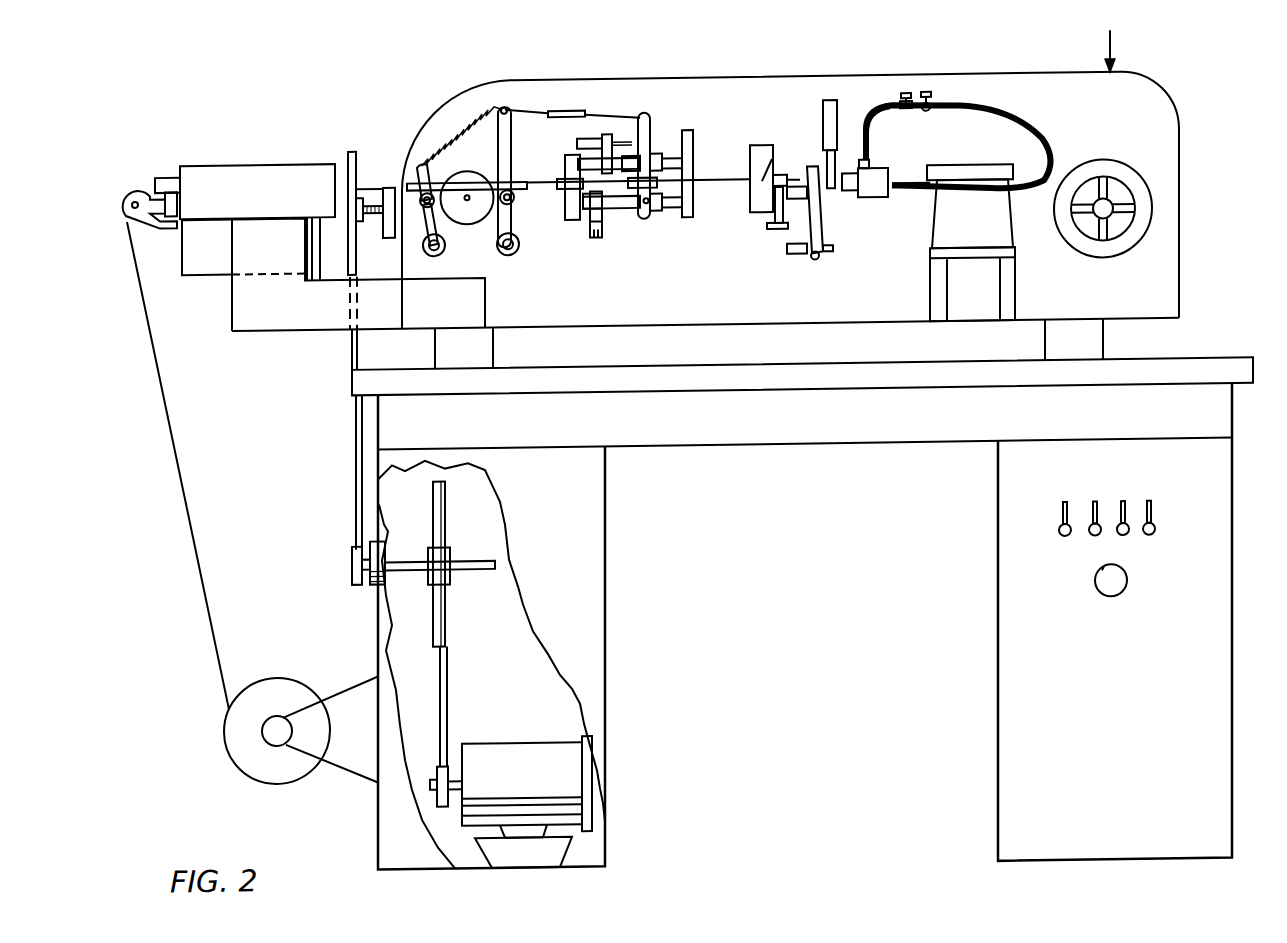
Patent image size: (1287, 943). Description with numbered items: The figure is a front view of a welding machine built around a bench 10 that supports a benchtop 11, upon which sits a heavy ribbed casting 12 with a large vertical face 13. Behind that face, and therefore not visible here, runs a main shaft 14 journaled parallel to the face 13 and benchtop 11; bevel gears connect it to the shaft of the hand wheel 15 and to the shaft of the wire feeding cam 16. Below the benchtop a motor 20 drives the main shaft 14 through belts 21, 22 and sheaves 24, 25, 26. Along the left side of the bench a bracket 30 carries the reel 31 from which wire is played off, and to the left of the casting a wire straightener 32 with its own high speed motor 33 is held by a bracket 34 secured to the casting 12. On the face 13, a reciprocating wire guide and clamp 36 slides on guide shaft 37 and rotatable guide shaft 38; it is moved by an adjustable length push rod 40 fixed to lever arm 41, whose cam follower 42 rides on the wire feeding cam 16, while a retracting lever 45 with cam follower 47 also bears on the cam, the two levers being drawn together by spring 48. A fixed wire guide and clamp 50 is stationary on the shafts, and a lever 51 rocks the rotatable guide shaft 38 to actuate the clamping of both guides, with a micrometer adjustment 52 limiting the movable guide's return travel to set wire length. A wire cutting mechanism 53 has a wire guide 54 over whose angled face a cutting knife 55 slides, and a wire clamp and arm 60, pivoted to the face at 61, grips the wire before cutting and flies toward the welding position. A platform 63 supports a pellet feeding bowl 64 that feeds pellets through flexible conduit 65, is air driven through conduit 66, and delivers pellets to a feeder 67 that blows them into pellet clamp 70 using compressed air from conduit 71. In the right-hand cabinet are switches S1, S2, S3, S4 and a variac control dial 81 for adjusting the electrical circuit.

The bench 10 is at (612, 519).
The benchtop 11 is at (1217, 363).
The heavy ribbed casting 12 is at (1111, 40).
The vertical face 13 is at (1112, 115).
The main shaft 14 is at (374, 200).
The hand wheel 15 is at (1130, 172).
The wire feeding cam 16 is at (470, 221).
The motor 20 is at (533, 740).
The belt 21 is at (448, 652).
The belt 22 is at (355, 424).
The sheave 24 is at (447, 599).
The sheave 25 is at (352, 552).
The sheave 26 is at (351, 148).
The bracket 30 is at (345, 758).
The reel 31 is at (280, 670).
The wire straightener 32 is at (287, 156).
The high speed motor 33 is at (207, 270).
The bracket 34 is at (305, 326).
The reciprocating wire guide and clamp 36 is at (645, 203).
The guide shaft 37 is at (678, 152).
The rotatable guide shaft 38 is at (678, 207).
The adjustable length push rod 40 is at (570, 108).
The lever arm 41 is at (513, 119).
The cam follower 42 is at (517, 198).
The retracting lever 45 is at (421, 161).
The cam follower 47 is at (422, 204).
The spring 48 is at (457, 143).
The fixed wire guide and clamp 50 is at (578, 185).
The lever 51 is at (604, 220).
The micrometer adjustment 52 is at (592, 130).
The wire cutting mechanism 53 is at (754, 148).
The wire guide 54 is at (772, 160).
The cutting knife 55 is at (795, 197).
The wire clamp and arm 60 is at (823, 229).
The pivot 61 is at (818, 261).
The platform 63 is at (990, 263).
The pellet feeding bowl 64 is at (978, 220).
The flexible conduit 65 is at (912, 193).
The conduit 66 is at (970, 108).
The feeder 67 is at (880, 176).
The pellet clamp 70 is at (829, 102).
The conduit 71 is at (880, 112).
The variac control dial 81 is at (1112, 603).
The switch S1 is at (1060, 540).
The switch S2 is at (1091, 540).
The switch S3 is at (1128, 540).
The switch S4 is at (1154, 540).